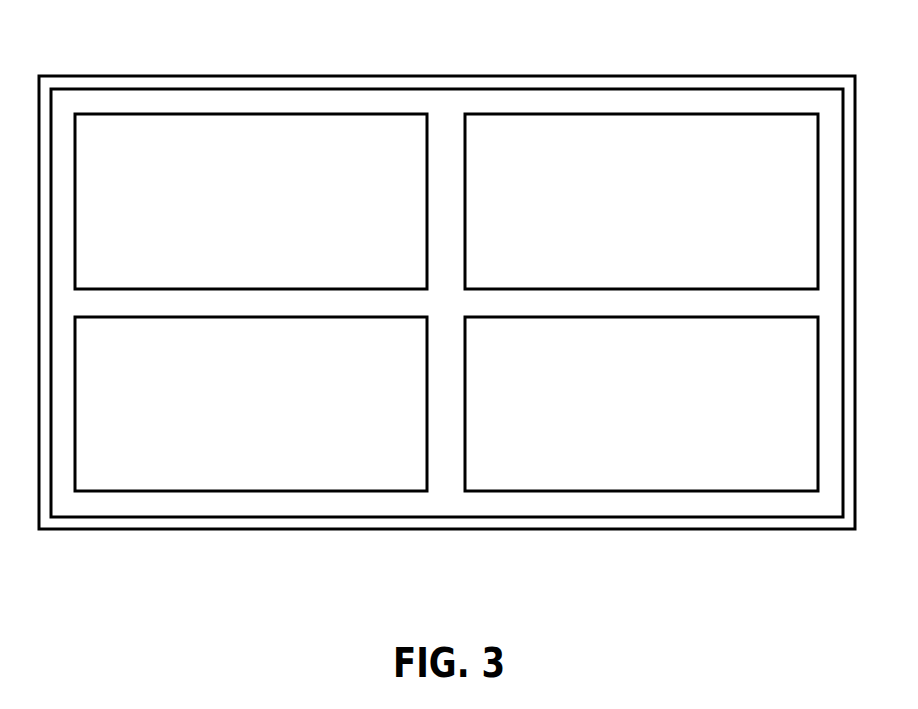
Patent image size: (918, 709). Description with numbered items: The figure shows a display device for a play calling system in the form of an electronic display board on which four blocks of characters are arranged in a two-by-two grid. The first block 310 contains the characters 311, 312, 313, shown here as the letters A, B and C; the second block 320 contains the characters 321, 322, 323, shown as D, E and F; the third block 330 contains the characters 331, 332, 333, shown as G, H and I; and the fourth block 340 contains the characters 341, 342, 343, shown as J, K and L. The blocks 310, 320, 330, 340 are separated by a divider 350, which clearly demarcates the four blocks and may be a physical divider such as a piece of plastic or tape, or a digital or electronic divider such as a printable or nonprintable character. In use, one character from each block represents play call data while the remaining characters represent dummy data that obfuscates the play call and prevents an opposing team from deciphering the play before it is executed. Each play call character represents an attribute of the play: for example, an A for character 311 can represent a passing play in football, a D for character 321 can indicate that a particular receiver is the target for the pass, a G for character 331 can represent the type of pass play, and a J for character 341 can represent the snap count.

The first block 310 is at (251, 201).
The character 311 is at (148, 138).
The character 312 is at (250, 138).
The character 313 is at (362, 138).
The second block 320 is at (641, 201).
The character 321 is at (538, 138).
The character 322 is at (646, 138).
The character 323 is at (742, 138).
The third block 330 is at (251, 404).
The character 331 is at (152, 452).
The character 332 is at (248, 452).
The character 333 is at (355, 452).
The fourth block 340 is at (641, 404).
The character 341 is at (532, 452).
The character 342 is at (645, 452).
The character 343 is at (746, 452).
The divider 350 is at (457, 452).